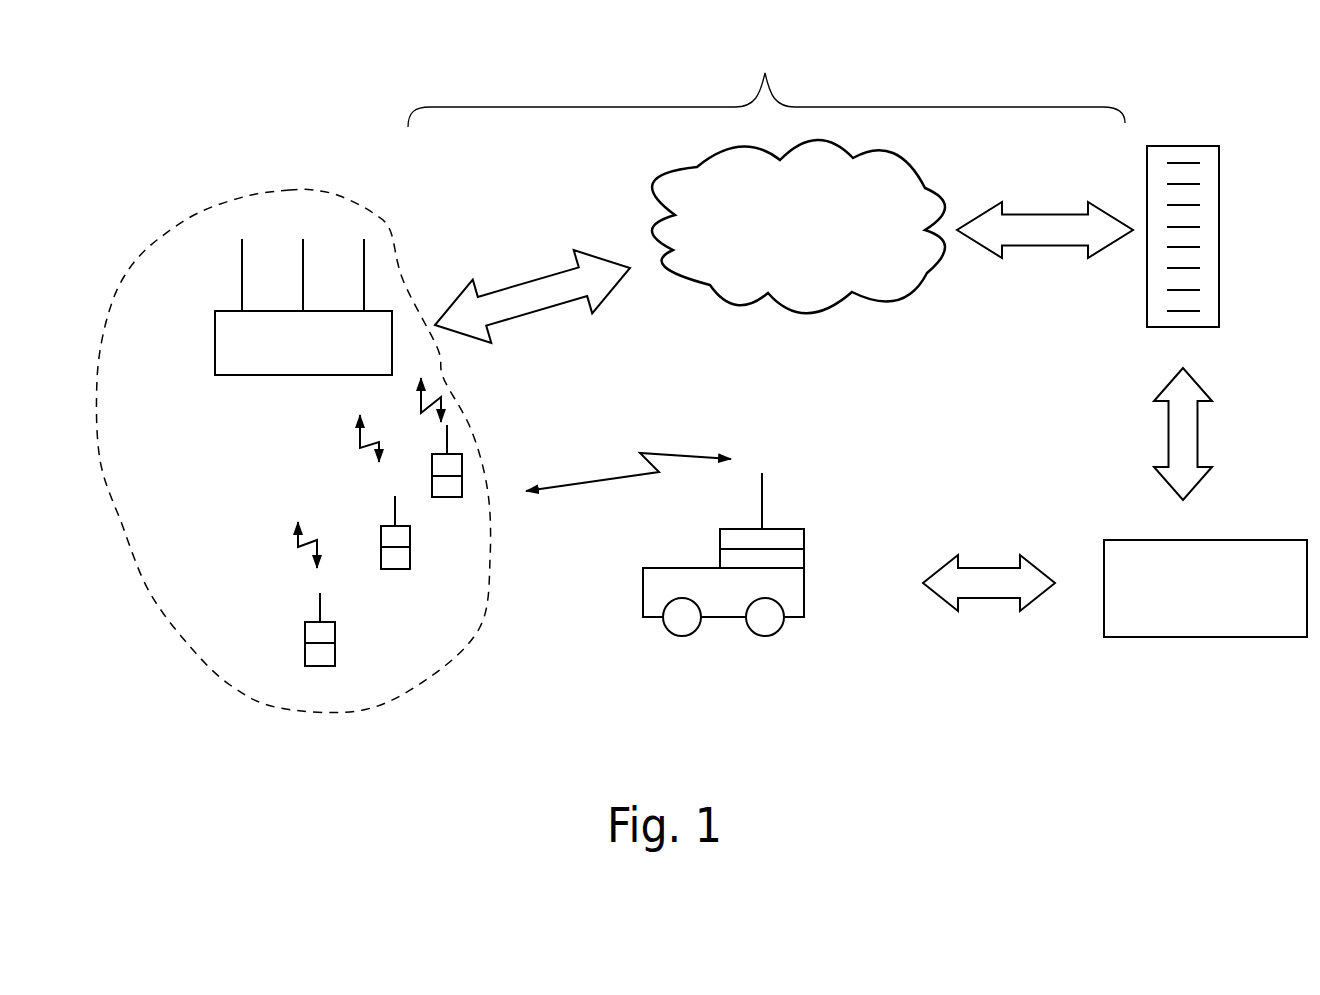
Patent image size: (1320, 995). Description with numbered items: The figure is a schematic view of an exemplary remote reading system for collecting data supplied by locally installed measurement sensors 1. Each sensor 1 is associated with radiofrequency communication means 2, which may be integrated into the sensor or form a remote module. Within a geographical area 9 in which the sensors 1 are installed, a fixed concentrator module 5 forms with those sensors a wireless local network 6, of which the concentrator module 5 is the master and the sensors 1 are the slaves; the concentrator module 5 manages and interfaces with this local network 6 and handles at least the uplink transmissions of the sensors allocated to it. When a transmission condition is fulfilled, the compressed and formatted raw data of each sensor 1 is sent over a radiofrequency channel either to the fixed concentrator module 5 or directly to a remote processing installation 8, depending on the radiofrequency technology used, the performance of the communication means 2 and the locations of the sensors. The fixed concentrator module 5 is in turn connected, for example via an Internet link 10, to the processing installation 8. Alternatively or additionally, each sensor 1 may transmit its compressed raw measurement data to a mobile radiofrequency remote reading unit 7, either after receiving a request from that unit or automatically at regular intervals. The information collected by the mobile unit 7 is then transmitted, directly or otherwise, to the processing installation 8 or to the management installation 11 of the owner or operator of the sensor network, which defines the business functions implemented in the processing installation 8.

The measurement sensor 1 is at (380, 575).
The radiofrequency communication means 2 is at (322, 680).
The fixed concentrator module 5 is at (202, 345).
The wireless local network 6 is at (293, 403).
The mobile radiofrequency remote reading unit 7 is at (722, 652).
The processing installation 8 is at (1182, 136).
The geographical area 9 is at (288, 190).
The Internet link 10 is at (770, 194).
The management installation 11 is at (1183, 654).